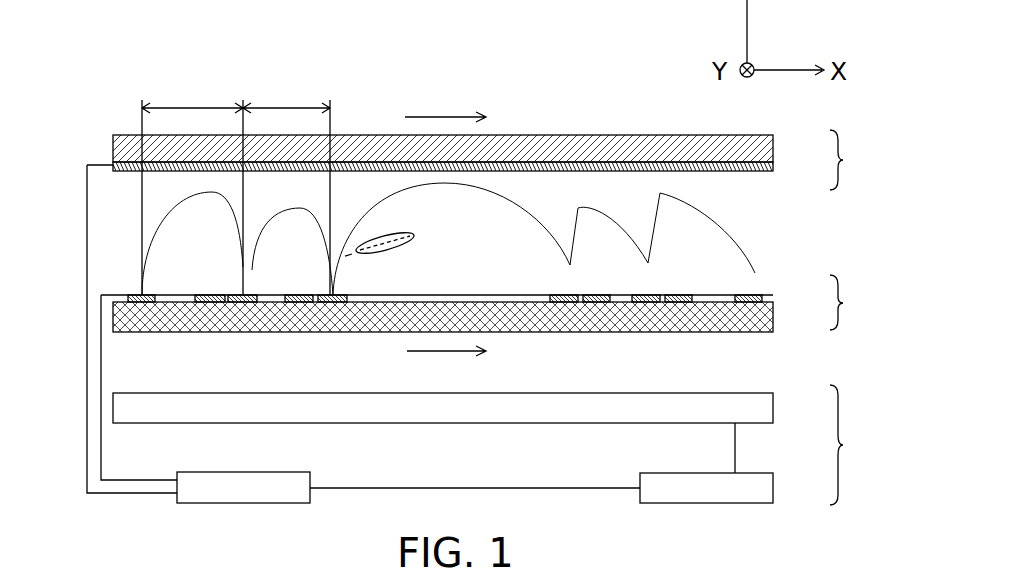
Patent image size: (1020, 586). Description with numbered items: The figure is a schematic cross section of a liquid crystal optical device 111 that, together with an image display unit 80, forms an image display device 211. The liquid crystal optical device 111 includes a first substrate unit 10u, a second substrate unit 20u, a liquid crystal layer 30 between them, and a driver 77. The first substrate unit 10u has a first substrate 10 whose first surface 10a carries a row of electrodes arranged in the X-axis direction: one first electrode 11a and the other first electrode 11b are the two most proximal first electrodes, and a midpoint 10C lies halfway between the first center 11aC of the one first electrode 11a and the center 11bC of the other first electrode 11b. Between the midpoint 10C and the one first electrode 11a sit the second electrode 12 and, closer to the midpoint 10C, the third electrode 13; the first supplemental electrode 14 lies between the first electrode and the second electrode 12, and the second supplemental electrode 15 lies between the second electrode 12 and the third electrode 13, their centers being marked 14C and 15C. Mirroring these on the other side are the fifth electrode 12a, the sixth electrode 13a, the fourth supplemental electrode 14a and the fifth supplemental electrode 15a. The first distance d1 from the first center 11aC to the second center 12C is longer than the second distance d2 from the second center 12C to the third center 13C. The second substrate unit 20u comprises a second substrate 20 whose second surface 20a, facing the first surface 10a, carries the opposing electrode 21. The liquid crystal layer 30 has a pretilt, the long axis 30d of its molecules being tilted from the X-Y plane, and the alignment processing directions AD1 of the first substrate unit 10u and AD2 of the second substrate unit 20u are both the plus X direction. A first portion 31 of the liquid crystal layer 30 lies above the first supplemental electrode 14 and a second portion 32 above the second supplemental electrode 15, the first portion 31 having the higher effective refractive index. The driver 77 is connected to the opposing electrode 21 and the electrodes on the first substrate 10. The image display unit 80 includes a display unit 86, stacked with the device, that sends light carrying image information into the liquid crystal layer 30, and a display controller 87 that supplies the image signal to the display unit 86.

The first substrate 10 is at (775, 313).
The first surface 10a is at (717, 333).
The midpoint 10C is at (447, 295).
The first substrate unit 10u is at (861, 302).
The one first electrode 11a is at (152, 302).
The first center 11aC is at (141, 302).
The other first electrode 11b is at (765, 300).
The center of the other first electrode 11bC is at (755, 333).
The second electrode 12 is at (237, 302).
The second center 12C is at (240, 295).
The fifth electrode 12a is at (645, 302).
The third electrode 13 is at (333, 302).
The third center 13C is at (333, 293).
The sixth electrode 13a is at (558, 302).
The first supplemental electrode 14 is at (200, 302).
The center of the first supplemental electrode 14C is at (203, 295).
The fourth supplemental electrode 14a is at (680, 302).
The second supplemental electrode 15 is at (300, 302).
The center of the second supplemental electrode 15C is at (297, 295).
The fifth supplemental electrode 15a is at (598, 302).
The second substrate 20 is at (775, 148).
The second surface 20a is at (115, 168).
The second substrate unit 20u is at (861, 160).
The opposing electrode 21 is at (775, 168).
The liquid crystal layer 30 is at (765, 230).
The long axis 30d is at (428, 231).
The first portion 31 is at (219, 214).
The second portion 32 is at (304, 202).
The driver 77 is at (310, 490).
The image display unit 80 is at (853, 445).
The display unit 86 is at (775, 408).
The display controller 87 is at (775, 488).
The liquid crystal optical device 111 is at (595, 123).
The image display device 211 is at (540, 64).
The direction of the alignment processing of the first substrate unit AD1 is at (443, 352).
The direction of the alignment processing of the second substrate unit AD2 is at (443, 117).
The first distance d1 is at (192, 187).
The second distance d2 is at (286, 187).